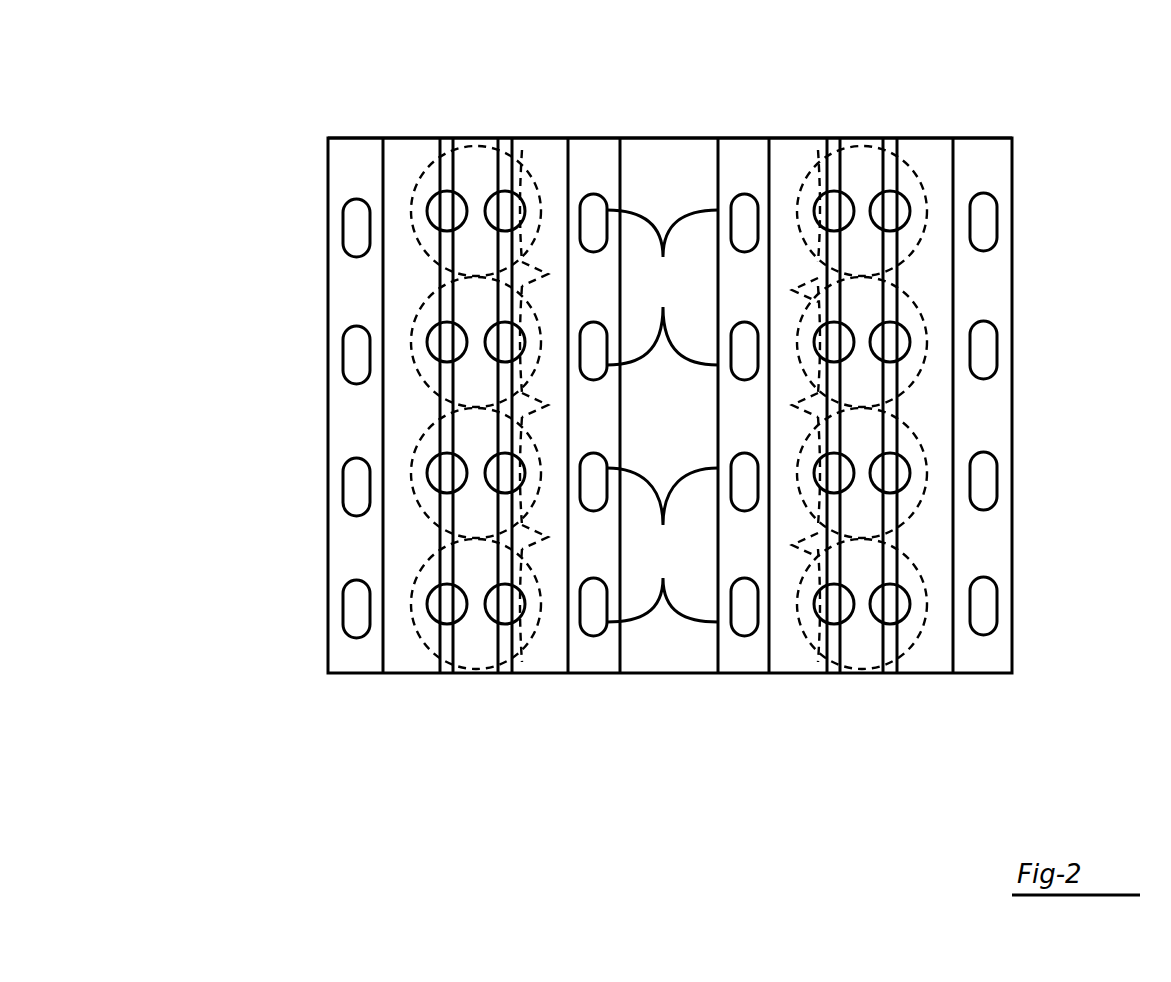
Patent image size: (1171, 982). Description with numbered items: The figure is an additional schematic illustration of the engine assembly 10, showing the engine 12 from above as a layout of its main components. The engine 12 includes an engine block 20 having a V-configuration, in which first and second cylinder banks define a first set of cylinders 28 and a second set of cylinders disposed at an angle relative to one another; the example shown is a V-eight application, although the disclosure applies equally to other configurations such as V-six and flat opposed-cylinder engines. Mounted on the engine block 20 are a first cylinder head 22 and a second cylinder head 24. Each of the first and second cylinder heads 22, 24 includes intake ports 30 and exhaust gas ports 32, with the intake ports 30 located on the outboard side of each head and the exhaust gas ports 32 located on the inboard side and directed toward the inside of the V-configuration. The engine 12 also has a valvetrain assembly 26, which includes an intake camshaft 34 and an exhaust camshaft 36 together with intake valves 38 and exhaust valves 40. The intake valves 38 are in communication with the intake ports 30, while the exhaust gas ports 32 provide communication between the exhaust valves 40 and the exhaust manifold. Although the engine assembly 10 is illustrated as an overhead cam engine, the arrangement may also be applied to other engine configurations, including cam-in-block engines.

The engine assembly 10 is at (264, 120).
The engine 12 is at (640, 72).
The engine block 20 is at (682, 138).
The first cylinder head 22 is at (428, 674).
The second cylinder head 24 is at (790, 674).
The valvetrain assembly 26 is at (474, 727).
The first set of cylinders 28 is at (548, 274).
The intake ports 30 is at (343, 352).
The exhaust gas ports 32 is at (662, 416).
The intake camshaft 34 is at (448, 138).
The exhaust camshaft 36 is at (505, 138).
The intake valves 38 is at (427, 200).
The exhaust valves 40 is at (536, 192).